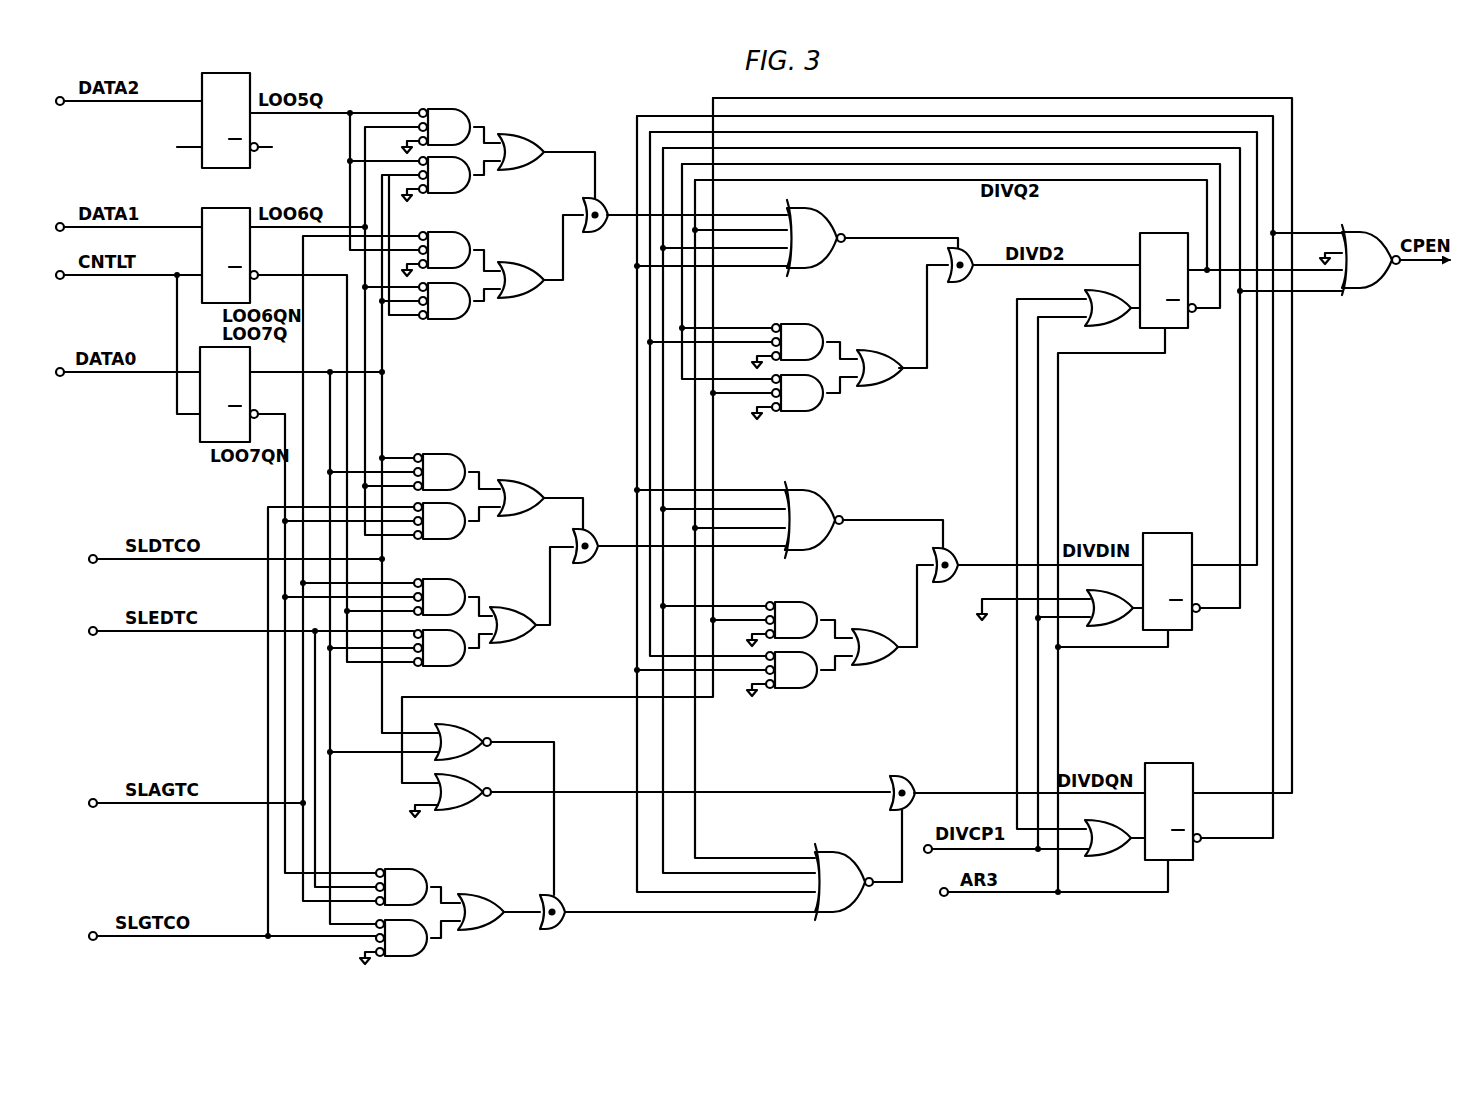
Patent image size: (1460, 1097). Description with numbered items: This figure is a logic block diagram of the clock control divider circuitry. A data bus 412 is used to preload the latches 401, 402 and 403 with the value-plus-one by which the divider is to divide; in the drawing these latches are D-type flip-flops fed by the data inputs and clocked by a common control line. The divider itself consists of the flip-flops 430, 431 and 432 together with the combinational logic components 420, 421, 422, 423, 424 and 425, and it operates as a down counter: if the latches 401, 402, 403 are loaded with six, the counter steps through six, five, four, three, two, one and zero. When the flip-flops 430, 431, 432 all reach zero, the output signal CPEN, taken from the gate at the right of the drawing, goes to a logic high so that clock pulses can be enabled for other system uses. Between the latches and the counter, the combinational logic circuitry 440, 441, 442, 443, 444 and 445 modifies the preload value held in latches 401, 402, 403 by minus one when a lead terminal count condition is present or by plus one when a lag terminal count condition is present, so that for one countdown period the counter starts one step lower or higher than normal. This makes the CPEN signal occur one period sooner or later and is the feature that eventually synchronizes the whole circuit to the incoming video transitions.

The latch 401 is at (251, 77).
The latch 402 is at (241, 208).
The latch 403 is at (202, 434).
The data bus 412 is at (136, 397).
The combinational logic component 420 is at (826, 227).
The combinational logic component 421 is at (860, 402).
The combinational logic component 422 is at (826, 509).
The combinational logic component 423 is at (838, 606).
The combinational logic component 424 is at (848, 894).
The combinational logic component 425 is at (456, 805).
The flip-flop 430 is at (1138, 243).
The flip-flop 431 is at (1165, 533).
The flip-flop 432 is at (1170, 763).
The combinational logic circuitry 440 is at (497, 111).
The combinational logic circuitry 441 is at (505, 323).
The combinational logic circuitry 442 is at (506, 463).
The combinational logic circuitry 443 is at (488, 588).
The combinational logic circuitry 444 is at (468, 739).
The combinational logic circuitry 445 is at (470, 940).